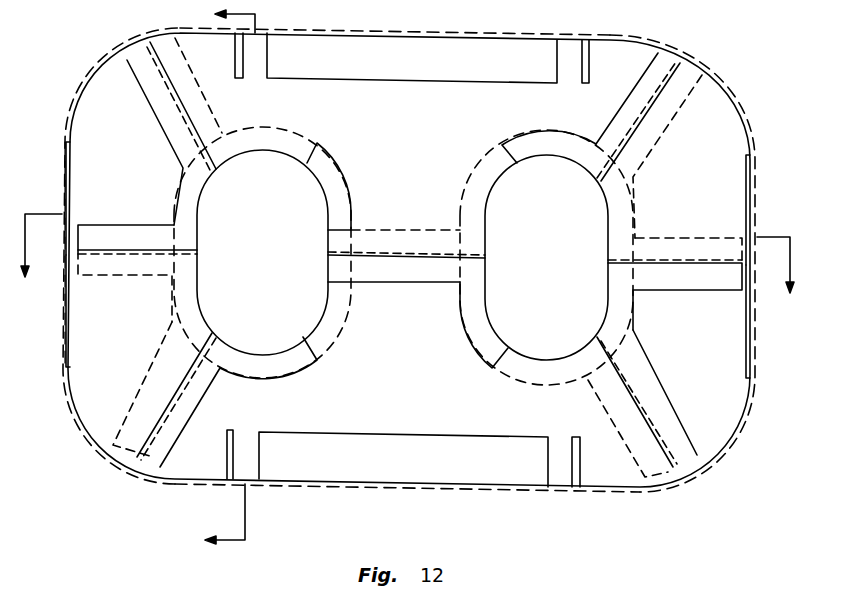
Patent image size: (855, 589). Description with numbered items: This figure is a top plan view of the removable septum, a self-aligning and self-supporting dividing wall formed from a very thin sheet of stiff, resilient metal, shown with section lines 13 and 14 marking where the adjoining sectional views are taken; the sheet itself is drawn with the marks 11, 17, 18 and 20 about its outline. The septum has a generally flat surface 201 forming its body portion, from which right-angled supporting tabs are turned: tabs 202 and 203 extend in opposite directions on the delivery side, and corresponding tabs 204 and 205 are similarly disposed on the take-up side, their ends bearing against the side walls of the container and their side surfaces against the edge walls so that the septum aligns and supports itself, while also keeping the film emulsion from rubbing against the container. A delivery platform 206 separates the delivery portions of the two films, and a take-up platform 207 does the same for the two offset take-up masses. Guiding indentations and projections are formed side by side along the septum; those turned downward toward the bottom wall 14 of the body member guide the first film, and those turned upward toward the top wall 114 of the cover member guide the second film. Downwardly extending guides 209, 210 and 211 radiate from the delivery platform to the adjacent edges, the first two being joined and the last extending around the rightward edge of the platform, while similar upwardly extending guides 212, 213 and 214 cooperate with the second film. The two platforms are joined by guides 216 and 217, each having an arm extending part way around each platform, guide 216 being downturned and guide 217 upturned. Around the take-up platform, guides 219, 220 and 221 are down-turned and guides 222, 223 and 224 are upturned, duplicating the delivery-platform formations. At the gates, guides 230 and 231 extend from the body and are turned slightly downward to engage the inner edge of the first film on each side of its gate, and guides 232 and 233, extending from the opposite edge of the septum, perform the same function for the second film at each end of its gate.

The fluid distribution assembly 11 is at (581, 37).
The section line 13- 13 is at (407, 242).
The bottom wall 14 is at (245, 278).
The top cover plate 17 is at (522, 35).
The bottom cover plate 18 is at (510, 489).
The housing 20 is at (63, 289).
The top wall 114 is at (72, 580).
The generally flat surface 201 is at (740, 100).
The tab 202 is at (745, 333).
The tab 203 is at (750, 186).
The tab 204 is at (69, 324).
The tab 205 is at (72, 195).
The delivery platform 206 is at (546, 257).
The take-up platform 207 is at (262, 253).
The downwardly extending guide 209 is at (658, 133).
The downwardly extending guide 210 is at (665, 244).
The downwardly extending guide 211 is at (600, 388).
The upwardly extending guide 212 is at (632, 103).
The upwardly extending guide 213 is at (700, 286).
The upwardly extending guide 214 is at (650, 394).
The guide 216 is at (402, 240).
The guide 217 is at (416, 279).
The down-turned guide 219 is at (200, 85).
The down-turned guide 220 is at (152, 283).
The down-turned guide 221 is at (160, 373).
The upturned guide 222 is at (147, 90).
The upturned guide 223 is at (148, 231).
The upturned guide 224 is at (200, 395).
The guide 230 is at (572, 52).
The guide 231 is at (252, 48).
The guide 232 is at (560, 469).
The guide 233 is at (245, 464).